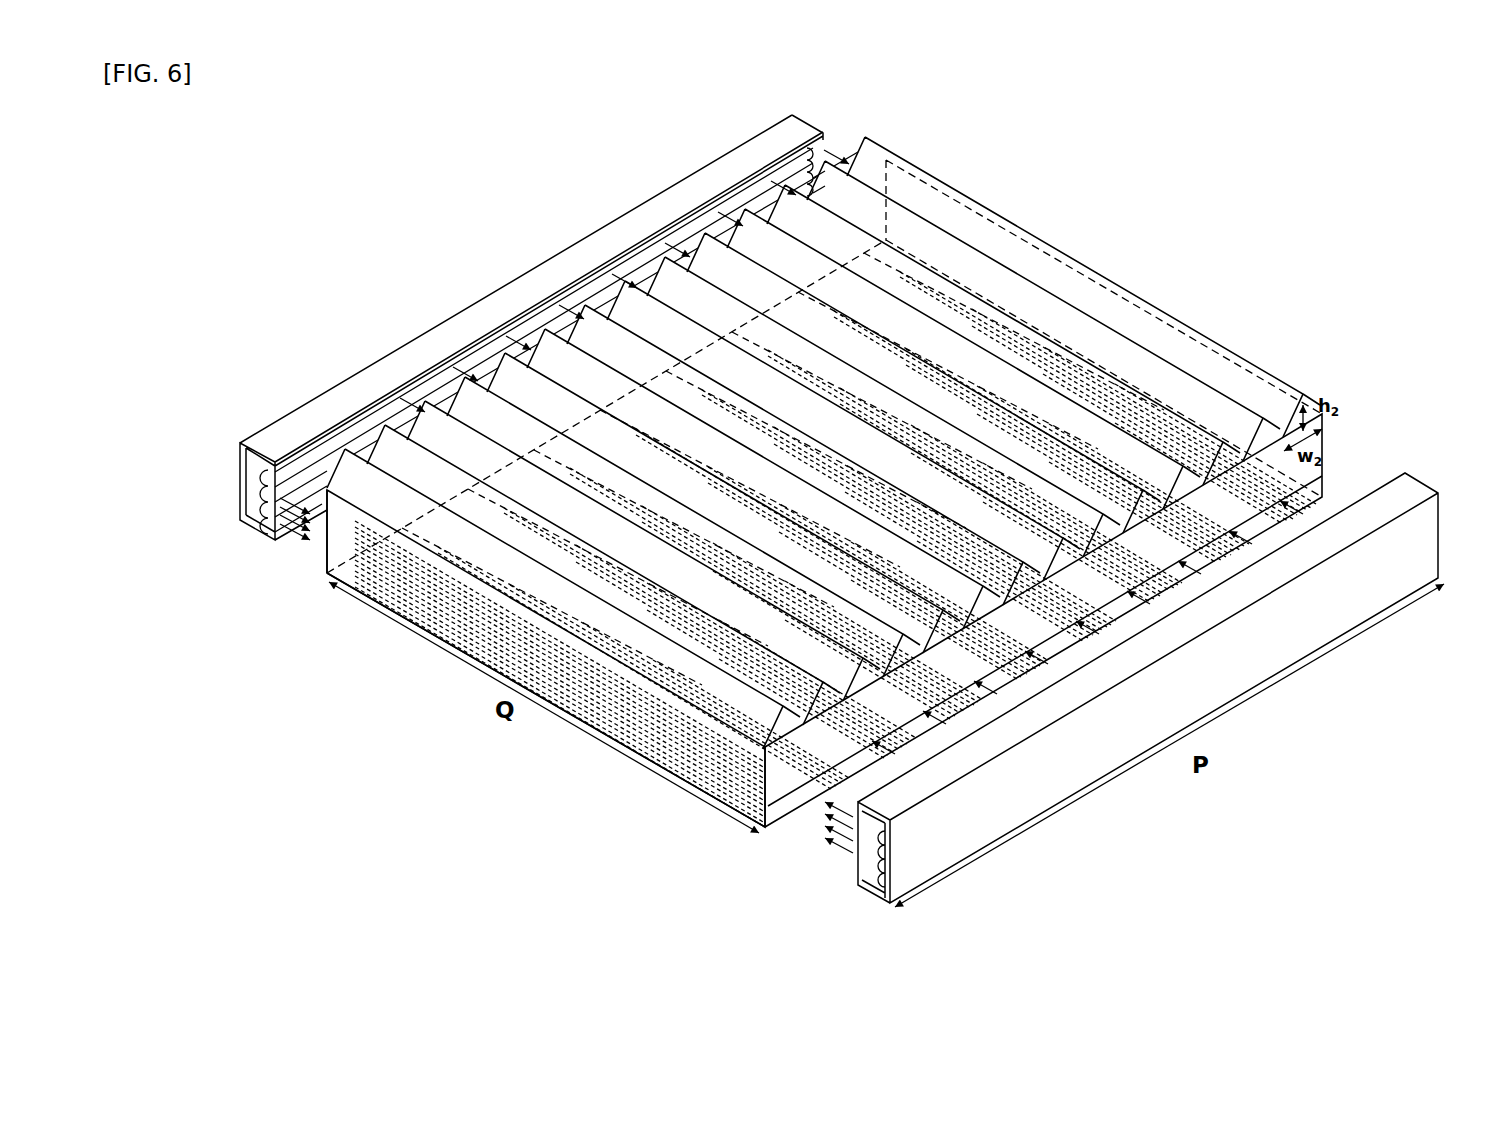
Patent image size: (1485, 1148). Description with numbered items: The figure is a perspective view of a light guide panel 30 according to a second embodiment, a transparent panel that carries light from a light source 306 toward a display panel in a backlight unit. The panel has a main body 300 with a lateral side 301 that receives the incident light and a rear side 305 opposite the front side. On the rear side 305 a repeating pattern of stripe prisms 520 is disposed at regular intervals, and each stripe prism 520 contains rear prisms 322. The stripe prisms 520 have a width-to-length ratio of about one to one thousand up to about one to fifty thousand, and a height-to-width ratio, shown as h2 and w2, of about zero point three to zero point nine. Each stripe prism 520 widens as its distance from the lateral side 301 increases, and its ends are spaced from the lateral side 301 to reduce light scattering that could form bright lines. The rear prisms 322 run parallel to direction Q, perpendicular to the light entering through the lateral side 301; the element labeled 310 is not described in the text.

The light guide panel 30 is at (823, 443).
The main body 300 is at (410, 607).
The lateral side 301 is at (322, 566).
The rear side 305 is at (358, 593).
The light source 306 is at (248, 528).
The channel wall fin 310 is at (712, 353).
The rear prisms 322 is at (512, 648).
The stripe prisms 520 is at (610, 722).